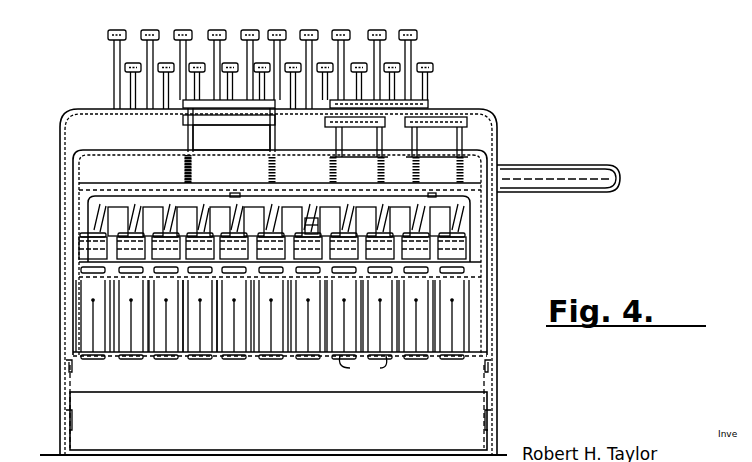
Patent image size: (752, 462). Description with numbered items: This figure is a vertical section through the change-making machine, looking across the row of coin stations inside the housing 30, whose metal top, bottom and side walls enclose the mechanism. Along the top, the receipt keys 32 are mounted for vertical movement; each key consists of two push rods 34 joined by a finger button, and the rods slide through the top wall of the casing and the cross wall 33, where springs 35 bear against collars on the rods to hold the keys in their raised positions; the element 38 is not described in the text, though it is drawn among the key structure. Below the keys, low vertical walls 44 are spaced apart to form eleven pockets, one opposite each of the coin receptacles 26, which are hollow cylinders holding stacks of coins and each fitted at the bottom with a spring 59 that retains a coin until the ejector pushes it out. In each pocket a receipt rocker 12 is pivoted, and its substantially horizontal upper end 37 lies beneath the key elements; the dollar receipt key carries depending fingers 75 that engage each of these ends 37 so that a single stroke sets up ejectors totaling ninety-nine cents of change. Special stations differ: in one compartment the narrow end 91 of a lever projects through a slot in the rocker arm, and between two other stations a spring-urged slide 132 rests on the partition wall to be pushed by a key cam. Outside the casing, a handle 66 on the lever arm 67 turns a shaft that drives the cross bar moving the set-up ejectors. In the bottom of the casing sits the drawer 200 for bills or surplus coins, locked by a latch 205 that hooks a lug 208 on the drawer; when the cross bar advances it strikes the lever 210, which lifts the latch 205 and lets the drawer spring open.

The housing 30 is at (273, 282).
The receipt keys 32 is at (183, 119).
The push rods 34 is at (262, 138).
The keys 38 is at (425, 62).
The cross wall 33 is at (152, 188).
The springs 35 is at (196, 172).
The slide 132 is at (236, 193).
The narrow end of lever 91 is at (320, 193).
The vertical walls 44 is at (432, 195).
The depending fingers 75 is at (96, 218).
The upper end of receipt rocker 37 is at (92, 248).
The receipt rocker 12 is at (490, 272).
The coin receptacles 26 is at (425, 317).
The spring 59 is at (362, 370).
The handle 66 is at (583, 177).
The lever arm 67 is at (498, 230).
The drawer 200 is at (278, 421).
The latch 205 is at (70, 378).
The lug 208 is at (70, 420).
The lever 210 is at (62, 364).